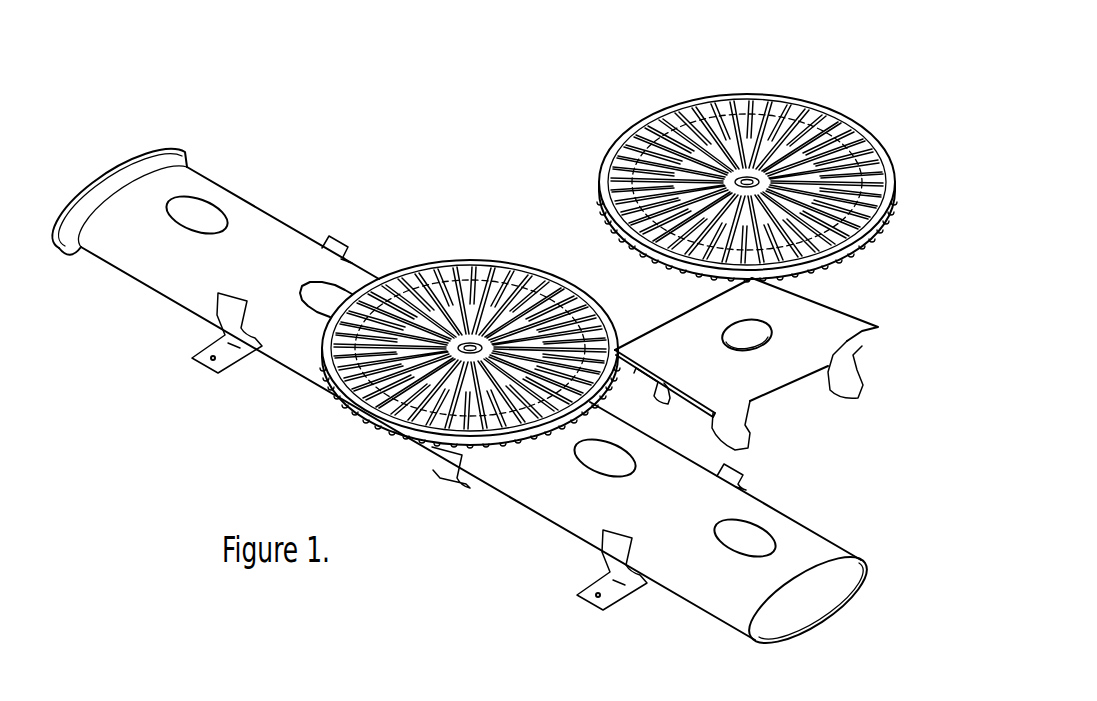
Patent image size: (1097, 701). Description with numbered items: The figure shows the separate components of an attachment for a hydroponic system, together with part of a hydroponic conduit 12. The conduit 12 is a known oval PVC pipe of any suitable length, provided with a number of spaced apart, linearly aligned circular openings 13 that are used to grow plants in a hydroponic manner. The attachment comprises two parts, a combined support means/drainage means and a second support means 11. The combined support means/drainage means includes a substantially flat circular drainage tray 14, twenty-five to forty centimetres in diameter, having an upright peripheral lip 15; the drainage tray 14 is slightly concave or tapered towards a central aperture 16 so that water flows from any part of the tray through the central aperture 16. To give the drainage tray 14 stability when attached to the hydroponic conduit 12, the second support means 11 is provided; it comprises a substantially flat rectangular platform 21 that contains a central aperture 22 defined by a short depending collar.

The heating device assembly 11 is at (510, 351).
The tubular housing 12 is at (271, 259).
The openings in housing 13 is at (640, 97).
The heat exchanger disc 14 is at (628, 245).
The peripheral rim of disc 15 is at (880, 135).
The radial fins of disc 16 is at (613, 148).
The mounting plate / saddle 21 is at (751, 335).
The opening in mounting plate 22 is at (718, 323).